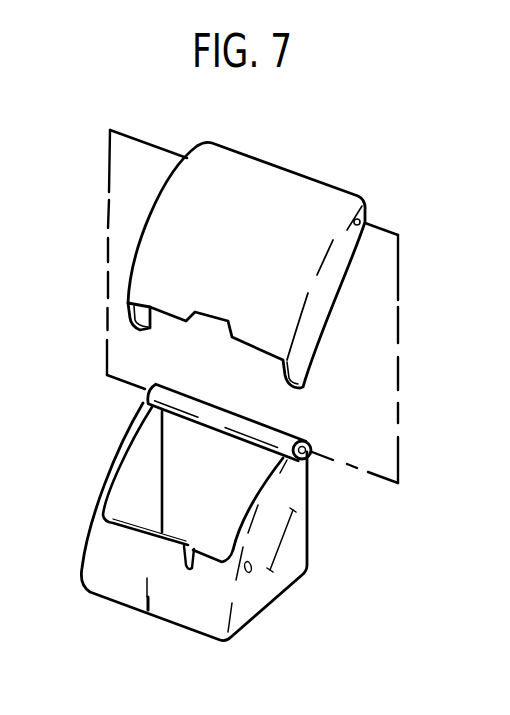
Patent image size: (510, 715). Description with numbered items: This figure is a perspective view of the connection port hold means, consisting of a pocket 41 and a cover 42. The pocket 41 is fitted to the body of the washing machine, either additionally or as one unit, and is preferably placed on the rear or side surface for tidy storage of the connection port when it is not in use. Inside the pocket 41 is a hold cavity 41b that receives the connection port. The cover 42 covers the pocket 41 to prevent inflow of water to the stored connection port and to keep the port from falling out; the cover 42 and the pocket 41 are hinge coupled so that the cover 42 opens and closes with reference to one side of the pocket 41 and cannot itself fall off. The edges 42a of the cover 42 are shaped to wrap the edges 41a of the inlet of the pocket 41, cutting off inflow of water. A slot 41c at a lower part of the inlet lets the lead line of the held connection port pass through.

The pocket 41 is at (209, 533).
The edges of the inlet of the pocket 41a is at (258, 500).
The hold cavity 41b is at (182, 497).
The slot 41c is at (187, 572).
The cover 42 is at (250, 240).
The edges of the cover 42a is at (315, 305).